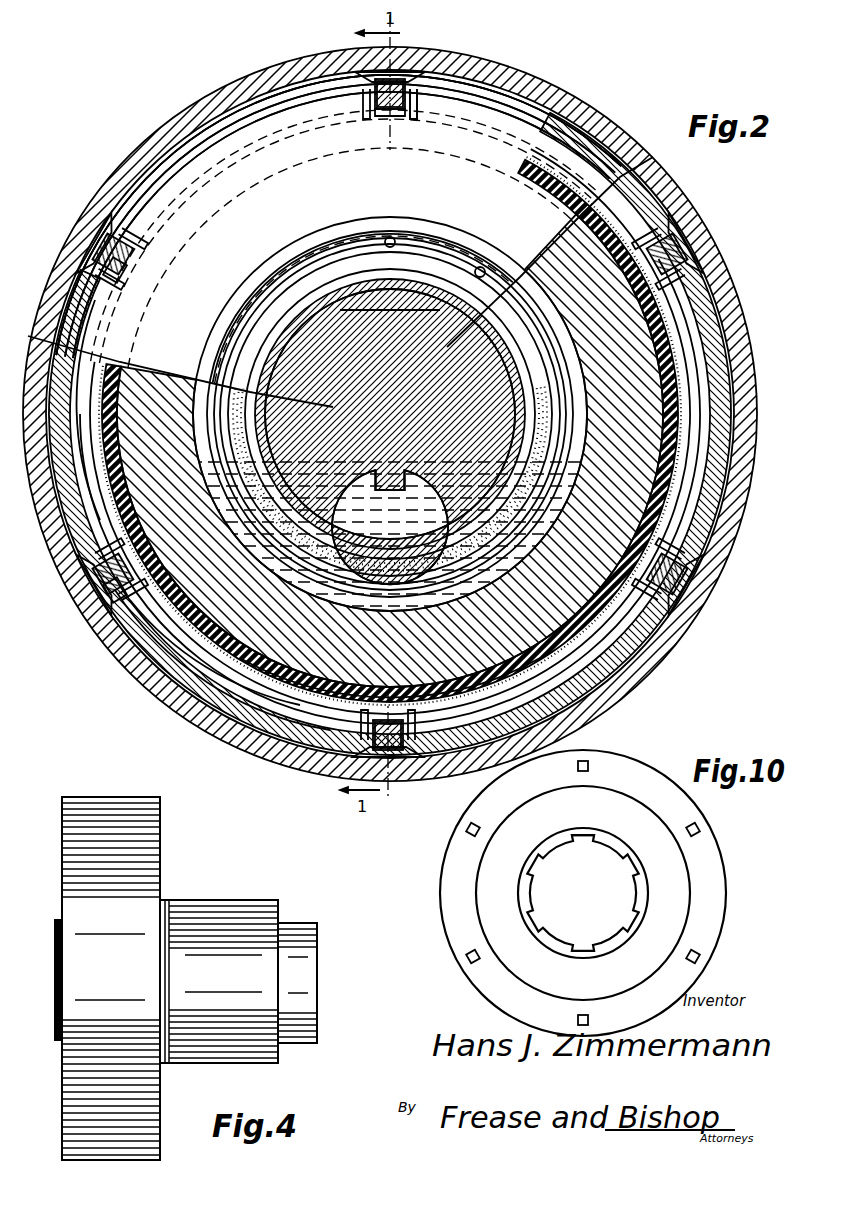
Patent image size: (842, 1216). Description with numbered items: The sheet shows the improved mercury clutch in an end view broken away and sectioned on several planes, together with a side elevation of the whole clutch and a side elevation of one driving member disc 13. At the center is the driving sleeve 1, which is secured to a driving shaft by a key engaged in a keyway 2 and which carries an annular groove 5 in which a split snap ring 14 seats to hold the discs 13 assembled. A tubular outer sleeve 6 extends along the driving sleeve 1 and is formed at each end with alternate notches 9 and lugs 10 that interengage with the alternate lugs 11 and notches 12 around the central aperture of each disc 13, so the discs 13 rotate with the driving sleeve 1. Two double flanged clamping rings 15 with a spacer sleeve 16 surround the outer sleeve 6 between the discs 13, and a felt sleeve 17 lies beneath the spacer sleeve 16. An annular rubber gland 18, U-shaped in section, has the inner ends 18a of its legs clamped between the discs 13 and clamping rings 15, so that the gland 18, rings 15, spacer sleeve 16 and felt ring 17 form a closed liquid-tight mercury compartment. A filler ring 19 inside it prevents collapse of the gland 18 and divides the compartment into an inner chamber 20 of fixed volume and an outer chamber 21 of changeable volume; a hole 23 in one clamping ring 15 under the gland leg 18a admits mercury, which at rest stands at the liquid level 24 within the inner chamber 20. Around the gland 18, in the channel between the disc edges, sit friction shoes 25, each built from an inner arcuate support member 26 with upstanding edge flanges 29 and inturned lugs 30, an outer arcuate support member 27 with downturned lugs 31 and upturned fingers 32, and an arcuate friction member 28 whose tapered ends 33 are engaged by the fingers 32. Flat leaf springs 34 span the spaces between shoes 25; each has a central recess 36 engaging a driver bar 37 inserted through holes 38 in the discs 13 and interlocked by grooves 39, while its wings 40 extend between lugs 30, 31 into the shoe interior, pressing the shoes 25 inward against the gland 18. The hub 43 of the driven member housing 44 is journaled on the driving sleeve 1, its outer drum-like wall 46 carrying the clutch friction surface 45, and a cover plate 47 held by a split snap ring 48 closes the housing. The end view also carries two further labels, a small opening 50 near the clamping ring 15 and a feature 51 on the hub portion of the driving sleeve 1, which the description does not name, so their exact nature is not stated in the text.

In FIG. 2, the driving sleeve 1 is at (460, 428).
In FIG. 4, the driving sleeve 1 is at (308, 971).
In FIG. 2, the keyway 2 is at (398, 475).
In FIG. 2, the annular groove 5 is at (500, 402).
In FIG. 2, the tubular outer sleeve 6 is at (248, 430).
In FIG. 2, the notches 9 is at (405, 300).
In FIG. 2, the lugs 10 is at (335, 300).
In FIG. 10, the lugs 11 is at (582, 846).
In FIG. 10, the notches 12 is at (557, 845).
In FIG. 2, the driving member disc 13 is at (685, 252).
In FIG. 10, the driving member disc 13 is at (645, 782).
In FIG. 2, the split snap ring 14 is at (510, 270).
In FIG. 2, the double flanged clamping ring 15 is at (305, 290).
In FIG. 2, the spacer sleeve 16 is at (535, 402).
In FIG. 2, the felt sleeve 17 is at (520, 345).
In FIG. 2, the annular rubber gland 18 is at (758, 368).
In FIG. 2, the inner ends of gland legs 18a is at (240, 335).
In FIG. 2, the annular filler ring 19 is at (660, 445).
In FIG. 2, the inner chamber 20 is at (335, 575).
In FIG. 2, the outer chamber 21 is at (300, 700).
In FIG. 2, the hole 23 is at (390, 236).
In FIG. 2, the liquid level 24 is at (555, 472).
In FIG. 2, the friction shoe 25 is at (205, 130).
In FIG. 2, the inner arcuate support member 26 is at (385, 125).
In FIG. 2, the outer arcuate support member 27 is at (265, 115).
In FIG. 2, the arcuate friction member 28 is at (610, 690).
In FIG. 2, the upstanding edge flanges 29 is at (230, 160).
In FIG. 2, the inturned lugs 30 is at (420, 122).
In FIG. 2, the downturned lugs 31 is at (393, 122).
In FIG. 2, the upturned finger 32 is at (115, 590).
In FIG. 2, the tapered ends 33 is at (108, 650).
In FIG. 2, the flat leaf spring 34 is at (300, 755).
In FIG. 2, the central recess 36 is at (398, 745).
In FIG. 2, the driver bar 37 is at (385, 760).
In FIG. 2, the holes 38 is at (130, 270).
In FIG. 10, the holes 38 is at (468, 955).
In FIG. 2, the grooves 39 is at (125, 245).
In FIG. 2, the wings 40 is at (95, 480).
In FIG. 4, the hub 43 is at (220, 910).
In FIG. 4, the driven member housing 44 is at (163, 856).
In FIG. 2, the clutch friction surface 45 is at (185, 705).
In FIG. 2, the outer drum-like wall 46 is at (212, 735).
In FIG. 4, the outer drum-like wall 46 is at (107, 978).
In FIG. 2, the cover plate 47 is at (344, 236).
In FIG. 2, the split snap ring 48 is at (575, 128).
In FIG. 2, the passage 50 is at (481, 266).
In FIG. 2, the hub shoulder 51 is at (408, 330).